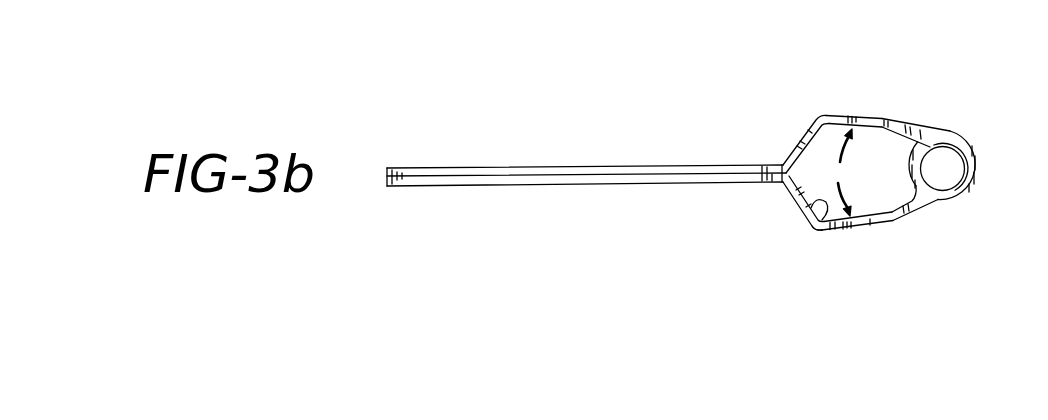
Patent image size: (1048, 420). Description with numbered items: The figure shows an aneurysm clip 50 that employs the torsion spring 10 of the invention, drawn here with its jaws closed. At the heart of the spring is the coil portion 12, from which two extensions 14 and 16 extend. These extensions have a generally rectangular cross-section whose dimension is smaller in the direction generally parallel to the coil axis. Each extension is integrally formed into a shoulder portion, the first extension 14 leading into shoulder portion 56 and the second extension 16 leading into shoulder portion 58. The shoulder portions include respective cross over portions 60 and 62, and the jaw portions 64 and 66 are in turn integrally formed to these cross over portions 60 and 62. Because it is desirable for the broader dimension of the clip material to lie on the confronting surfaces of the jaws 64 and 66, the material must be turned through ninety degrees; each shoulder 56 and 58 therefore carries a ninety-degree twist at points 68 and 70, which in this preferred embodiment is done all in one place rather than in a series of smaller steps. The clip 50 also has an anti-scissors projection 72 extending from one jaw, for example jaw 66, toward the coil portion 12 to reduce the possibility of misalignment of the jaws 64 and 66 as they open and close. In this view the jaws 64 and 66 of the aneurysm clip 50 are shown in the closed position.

The torsion spring 10 is at (982, 157).
The coil portion 12 is at (972, 196).
The extension 14 is at (912, 125).
The extension 16 is at (915, 206).
The aneurysm clip 50 is at (718, 104).
The shoulder portion 56 is at (818, 114).
The shoulder portion 58 is at (830, 231).
The cross over portion 60 is at (805, 135).
The cross over portion 62 is at (797, 203).
The jaw portion 64 is at (479, 187).
The jaw portion 66 is at (478, 167).
The twist point 68 is at (882, 118).
The twist point 70 is at (897, 217).
The tab 72 is at (818, 224).